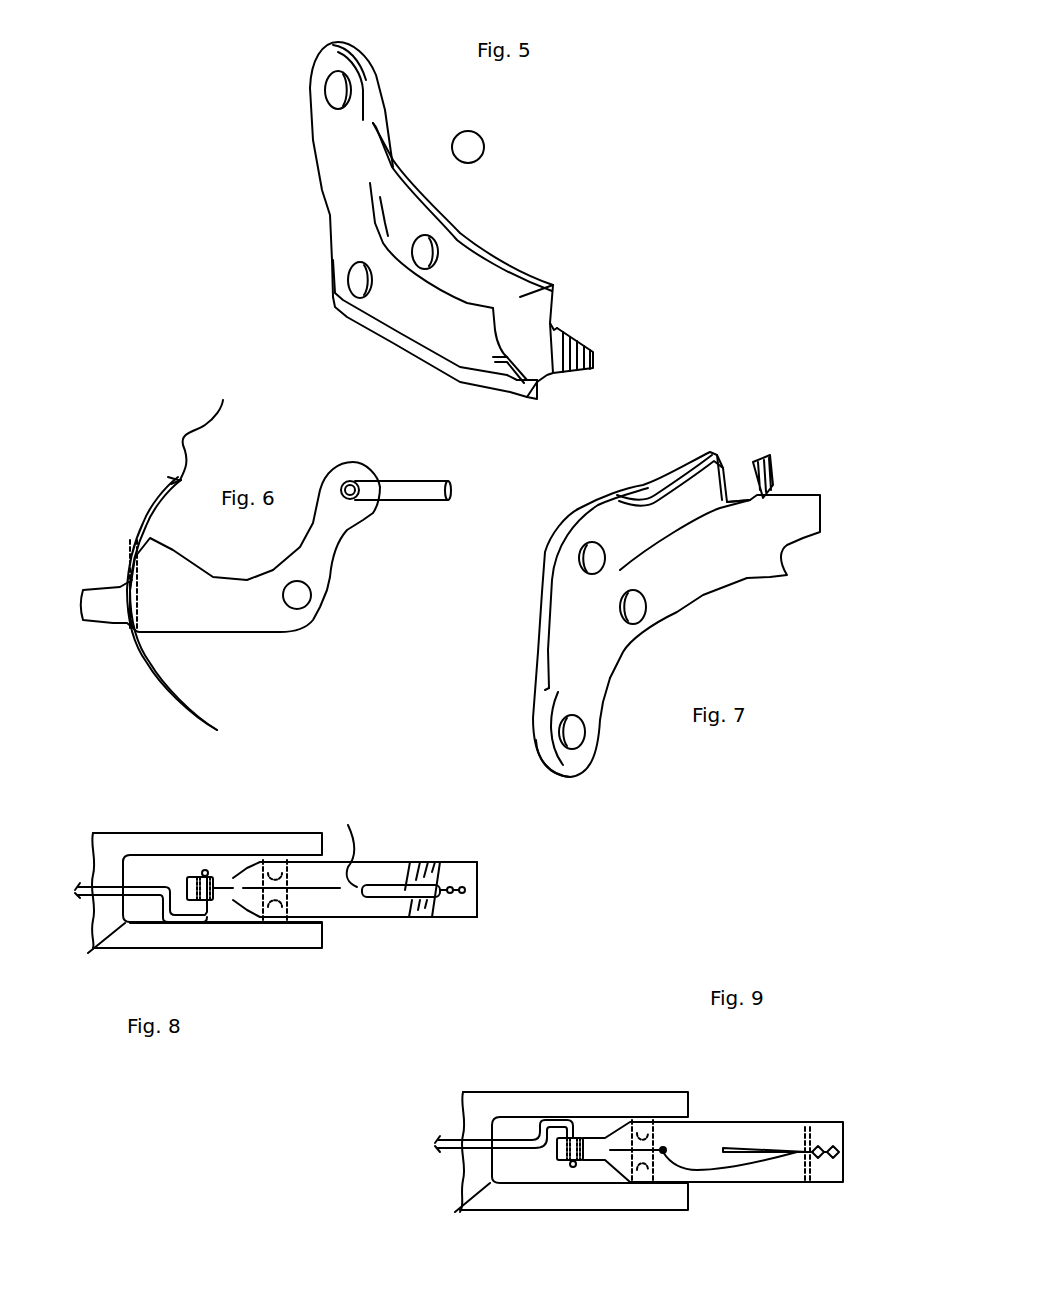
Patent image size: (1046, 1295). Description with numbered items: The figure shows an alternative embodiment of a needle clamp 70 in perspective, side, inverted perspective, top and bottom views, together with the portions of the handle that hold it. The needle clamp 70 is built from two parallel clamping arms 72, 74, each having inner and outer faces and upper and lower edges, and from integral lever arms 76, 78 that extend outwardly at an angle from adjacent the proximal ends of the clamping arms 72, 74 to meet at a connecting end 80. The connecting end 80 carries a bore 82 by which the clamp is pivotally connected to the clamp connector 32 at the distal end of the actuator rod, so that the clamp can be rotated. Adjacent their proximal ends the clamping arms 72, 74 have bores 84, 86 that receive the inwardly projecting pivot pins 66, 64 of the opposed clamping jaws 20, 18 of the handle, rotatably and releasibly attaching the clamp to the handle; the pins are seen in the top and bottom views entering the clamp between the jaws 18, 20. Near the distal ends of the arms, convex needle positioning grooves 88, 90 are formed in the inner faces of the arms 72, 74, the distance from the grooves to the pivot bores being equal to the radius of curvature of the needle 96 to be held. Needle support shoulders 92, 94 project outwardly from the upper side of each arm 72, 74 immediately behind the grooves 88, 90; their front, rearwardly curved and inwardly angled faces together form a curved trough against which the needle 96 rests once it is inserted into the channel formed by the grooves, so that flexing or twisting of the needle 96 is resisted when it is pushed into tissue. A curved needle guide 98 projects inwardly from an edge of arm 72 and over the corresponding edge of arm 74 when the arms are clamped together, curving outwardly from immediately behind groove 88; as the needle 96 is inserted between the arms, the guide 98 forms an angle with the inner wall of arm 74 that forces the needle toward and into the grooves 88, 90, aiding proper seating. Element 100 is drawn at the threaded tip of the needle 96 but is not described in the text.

In FIG. 8, the clamping jaw 18 is at (185, 842).
In FIG. 9, the clamping jaw 18 is at (565, 1197).
In FIG. 8, the clamping jaw 20 is at (207, 933).
In FIG. 9, the clamping jaw 20 is at (562, 1103).
In FIG. 8, the clamp connector 32 is at (162, 913).
In FIG. 9, the clamp connector 32 is at (540, 1120).
In FIG. 8, the pivot pin 64 is at (247, 838).
In FIG. 9, the pivot pin 64 is at (643, 1187).
In FIG. 8, the pivot pin 66 is at (277, 917).
In FIG. 9, the pivot pin 66 is at (640, 1120).
In FIG. 5, the needle clamp 70 is at (438, 188).
In FIG. 5, the clamping arm 72 is at (408, 335).
In FIG. 7, the clamping arm 72 is at (617, 512).
In FIG. 8, the clamping arm 72 is at (447, 915).
In FIG. 5, the clamping arm 74 is at (493, 258).
In FIG. 6, the clamping arm 74 is at (218, 617).
In FIG. 7, the clamping arm 74 is at (710, 578).
In FIG. 8, the clamping arm 74 is at (452, 873).
In FIG. 5, the lever arm 76 is at (342, 157).
In FIG. 5, the lever arm 78 is at (392, 170).
In FIG. 6, the lever arm 78 is at (327, 550).
In FIG. 5, the connecting end 80 is at (348, 53).
In FIG. 7, the connecting end 80 is at (542, 748).
In FIG. 5, the bore 82 is at (332, 90).
In FIG. 7, the bore 82 is at (577, 733).
In FIG. 5, the bore 84 is at (356, 280).
In FIG. 7, the bore 84 is at (588, 545).
In FIG. 5, the bore 86 is at (423, 252).
In FIG. 6, the bore 86 is at (293, 600).
In FIG. 7, the bore 86 is at (632, 615).
In FIG. 5, the needle positioning groove 88 is at (502, 357).
In FIG. 7, the needle positioning groove 88 is at (717, 452).
In FIG. 5, the needle positioning groove 90 is at (550, 323).
In FIG. 7, the needle positioning groove 90 is at (748, 502).
In FIG. 5, the needle support shoulder 92 is at (493, 340).
In FIG. 8, the needle support shoulder 92 is at (427, 913).
In FIG. 5, the needle support shoulder 94 is at (520, 297).
In FIG. 8, the needle support shoulder 94 is at (432, 870).
In FIG. 6, the needle 96 is at (160, 493).
In FIG. 8, the needle 96 is at (397, 887).
In FIG. 9, the needle 96 is at (790, 1147).
In FIG. 7, the curved needle guide 98 is at (650, 488).
In FIG. 9, the curved needle guide 98 is at (697, 1143).
In FIG. 5, the threaded tip 100 is at (558, 371).
In FIG. 7, the threaded tip 100 is at (753, 465).
In FIG. 8, the threaded tip 100 is at (465, 890).
In FIG. 9, the threaded tip 100 is at (828, 1143).